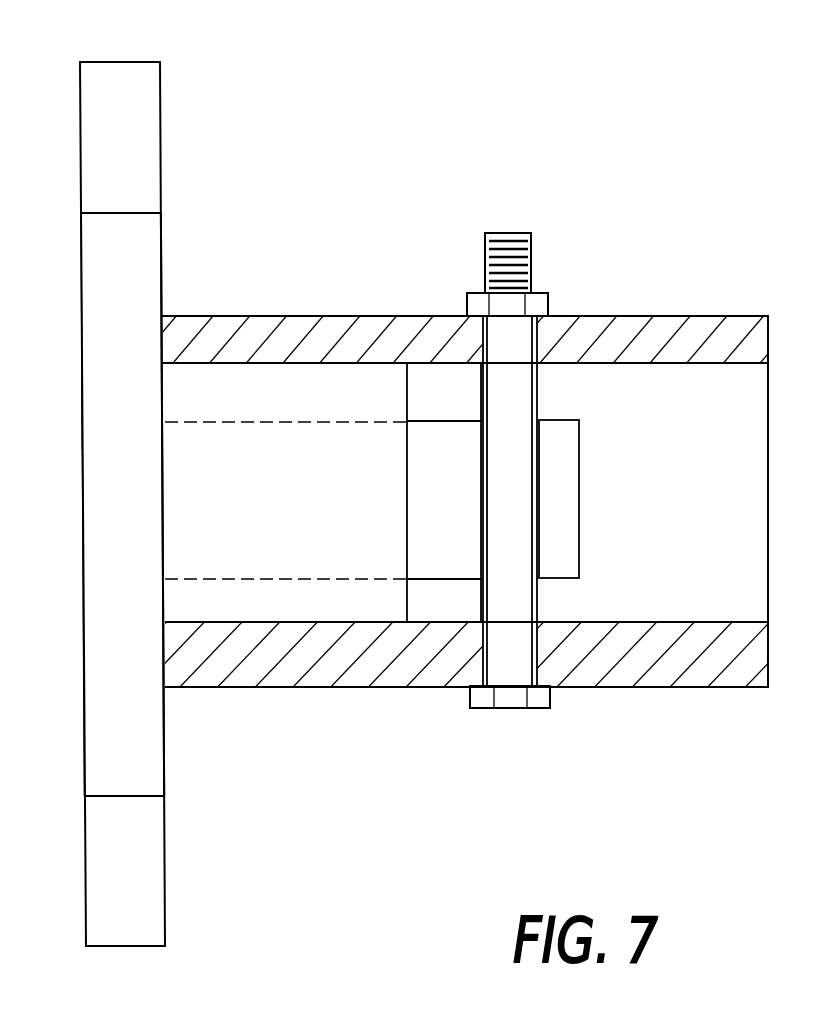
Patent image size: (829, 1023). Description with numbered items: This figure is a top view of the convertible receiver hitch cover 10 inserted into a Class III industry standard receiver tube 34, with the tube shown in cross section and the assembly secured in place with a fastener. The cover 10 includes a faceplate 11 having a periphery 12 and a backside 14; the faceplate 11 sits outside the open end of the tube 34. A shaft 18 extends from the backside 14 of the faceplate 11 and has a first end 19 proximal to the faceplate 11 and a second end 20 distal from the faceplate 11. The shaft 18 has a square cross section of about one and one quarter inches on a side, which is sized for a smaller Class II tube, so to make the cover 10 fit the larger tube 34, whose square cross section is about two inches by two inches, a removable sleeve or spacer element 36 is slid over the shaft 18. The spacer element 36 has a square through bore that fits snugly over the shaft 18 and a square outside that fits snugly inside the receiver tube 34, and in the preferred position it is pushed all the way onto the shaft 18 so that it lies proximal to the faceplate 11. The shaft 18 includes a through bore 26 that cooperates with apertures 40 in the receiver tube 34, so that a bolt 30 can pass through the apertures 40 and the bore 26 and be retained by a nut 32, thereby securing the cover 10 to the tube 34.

The convertible receiver hitch cover 10 is at (72, 447).
The faceplate 11 is at (112, 259).
The periphery 12 is at (97, 62).
The backside 14 is at (163, 248).
The shaft 18 is at (436, 557).
The first end 19 is at (202, 450).
The second end 20 is at (572, 456).
The through bore 26 is at (530, 535).
The bolt 30 is at (513, 710).
The nut 32 is at (468, 302).
The Class III receiver tube 34 is at (633, 323).
The sleeve or spacer element 36 is at (371, 404).
The apertures 40 is at (553, 318).